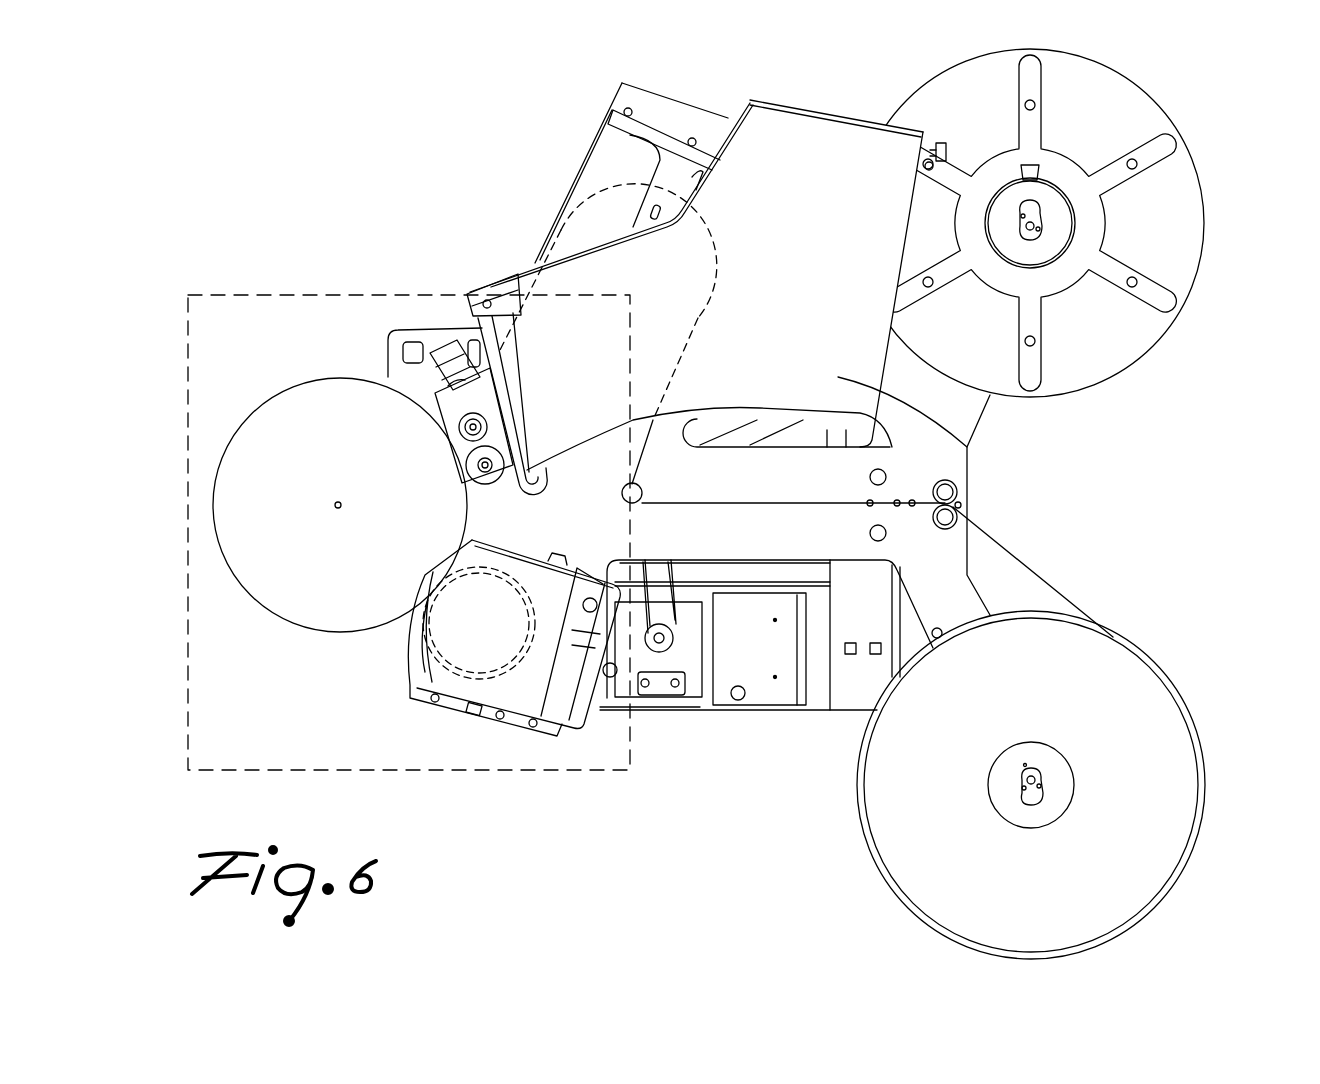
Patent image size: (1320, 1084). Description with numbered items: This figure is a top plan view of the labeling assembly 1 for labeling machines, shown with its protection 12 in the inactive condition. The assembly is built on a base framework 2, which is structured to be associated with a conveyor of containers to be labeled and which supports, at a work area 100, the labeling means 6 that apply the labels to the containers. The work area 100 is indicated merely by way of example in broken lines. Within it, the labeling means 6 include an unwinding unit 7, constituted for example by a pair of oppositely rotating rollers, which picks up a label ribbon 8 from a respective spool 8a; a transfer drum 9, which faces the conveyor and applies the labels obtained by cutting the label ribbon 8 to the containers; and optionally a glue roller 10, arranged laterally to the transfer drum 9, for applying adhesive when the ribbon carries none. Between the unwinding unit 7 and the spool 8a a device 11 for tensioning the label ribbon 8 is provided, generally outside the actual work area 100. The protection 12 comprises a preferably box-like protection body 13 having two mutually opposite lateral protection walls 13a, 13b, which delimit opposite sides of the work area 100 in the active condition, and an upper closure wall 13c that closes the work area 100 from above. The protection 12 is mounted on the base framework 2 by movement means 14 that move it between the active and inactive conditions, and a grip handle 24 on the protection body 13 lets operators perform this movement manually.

The labeling assembly 1 is at (368, 179).
The work area 100 is at (262, 293).
The base framework 2 is at (702, 714).
The labeling means 6 is at (277, 377).
The unwinding unit 7 is at (438, 406).
The label ribbon 8 is at (990, 598).
The spool 8a is at (1153, 755).
The transfer drum 9 is at (247, 508).
The glue roller 10 is at (480, 690).
The device for tensioning the label ribbon 11 is at (632, 97).
The protection 12 is at (824, 92).
The protection body 13 is at (754, 127).
The lateral protection wall 13a is at (895, 337).
The lateral protection wall 13b is at (497, 370).
The upper closure wall 13c is at (915, 452).
The movement means 14 is at (471, 272).
The grip handle 24 is at (950, 152).